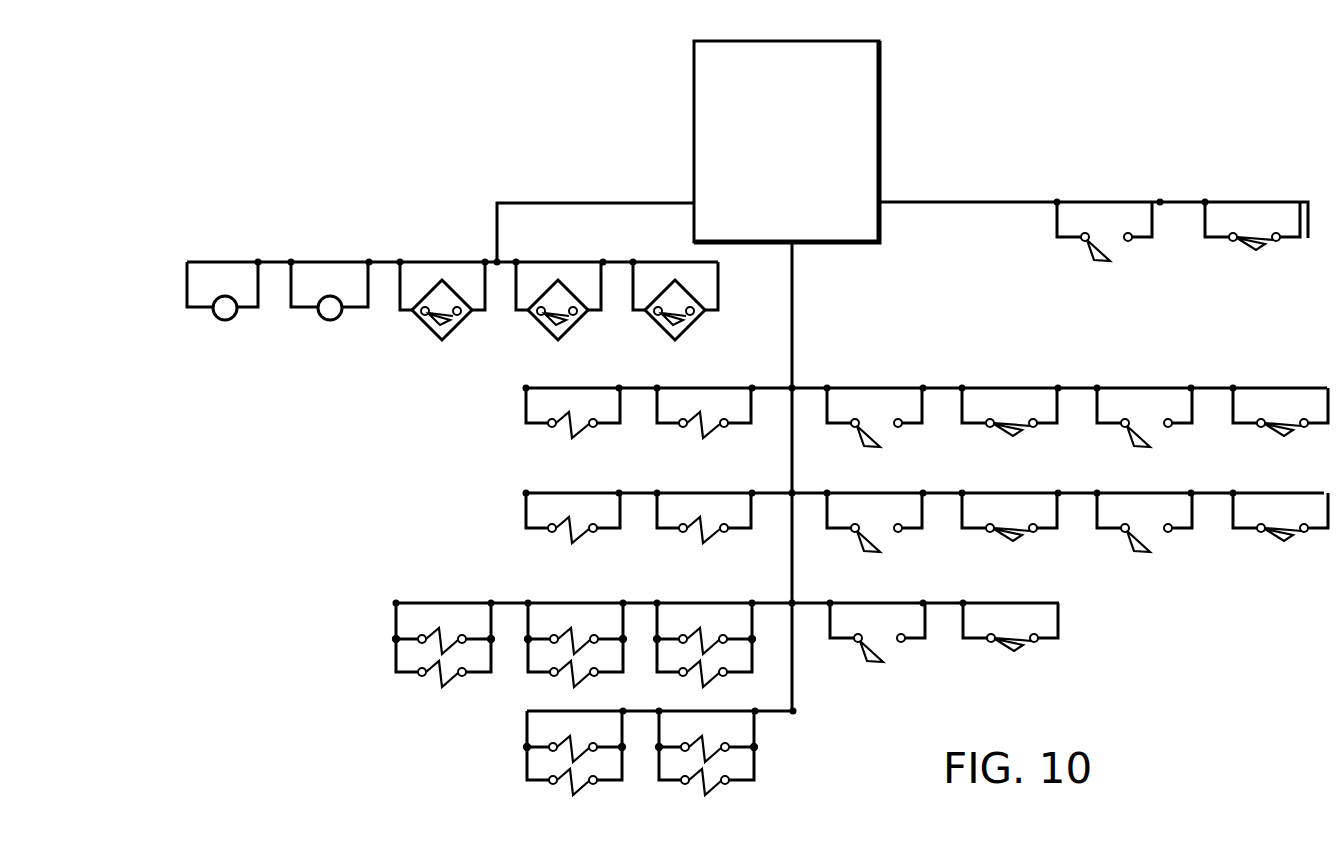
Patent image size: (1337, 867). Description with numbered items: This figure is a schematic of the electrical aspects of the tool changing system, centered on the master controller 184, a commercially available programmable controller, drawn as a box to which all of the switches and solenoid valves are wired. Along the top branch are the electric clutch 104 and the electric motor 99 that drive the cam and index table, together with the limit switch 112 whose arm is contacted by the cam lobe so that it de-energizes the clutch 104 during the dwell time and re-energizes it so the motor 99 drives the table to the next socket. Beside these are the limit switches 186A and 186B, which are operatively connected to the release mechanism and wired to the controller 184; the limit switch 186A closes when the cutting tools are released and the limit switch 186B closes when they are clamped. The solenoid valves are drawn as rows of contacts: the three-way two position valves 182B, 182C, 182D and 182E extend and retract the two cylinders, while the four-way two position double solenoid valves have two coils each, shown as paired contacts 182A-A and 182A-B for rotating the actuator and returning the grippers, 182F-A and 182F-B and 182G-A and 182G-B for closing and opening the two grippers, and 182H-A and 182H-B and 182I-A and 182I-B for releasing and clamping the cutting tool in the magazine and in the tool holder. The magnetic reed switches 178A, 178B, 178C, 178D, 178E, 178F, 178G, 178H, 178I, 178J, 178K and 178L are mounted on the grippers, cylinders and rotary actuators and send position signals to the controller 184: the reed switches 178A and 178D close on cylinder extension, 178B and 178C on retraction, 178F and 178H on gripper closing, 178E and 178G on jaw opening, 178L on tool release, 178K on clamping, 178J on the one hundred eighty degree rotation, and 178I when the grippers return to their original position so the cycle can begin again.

The master controller 184 is at (706, 88).
The electric clutch 104 is at (197, 308).
The electric motor 99 is at (308, 308).
The limit switch 112 is at (432, 338).
The limit switch 186A is at (560, 338).
The limit switch 186B is at (672, 318).
The three-way two position solenoid valve 182B is at (573, 413).
The three-way two position solenoid valve 182C is at (704, 413).
The three-way two position solenoid valve 182D is at (573, 518).
The three-way two position solenoid valve 182E is at (704, 518).
The four-way double solenoid valve coil 182A-A is at (444, 645).
The four-way double solenoid valve coil 182A-B is at (402, 673).
The four-way double solenoid valve coil 182F-A is at (576, 645).
The four-way double solenoid valve coil 182F-B is at (545, 673).
The four-way double solenoid valve coil 182G-A is at (705, 645).
The four-way double solenoid valve coil 182G-B is at (673, 673).
The four-way double solenoid valve coil 182H-A is at (540, 720).
The four-way double solenoid valve coil 182H-B is at (527, 770).
The four-way double solenoid valve coil 182I-A is at (775, 721).
The four-way double solenoid valve coil 182I-B is at (758, 765).
The magnetic reed switch 178A is at (874, 417).
The magnetic reed switch 178B is at (1009, 412).
The magnetic reed switch 178C is at (1280, 412).
The magnetic reed switch 178D is at (1144, 417).
The magnetic reed switch 178E is at (874, 522).
The magnetic reed switch 178F is at (1009, 517).
The magnetic reed switch 178G is at (1144, 522).
The magnetic reed switch 178H is at (1280, 517).
The magnetic reed switch 178I is at (1010, 627).
The magnetic reed switch 178J is at (877, 632).
The magnetic reed switch 178K is at (1252, 226).
The magnetic reed switch 178L is at (1104, 231).